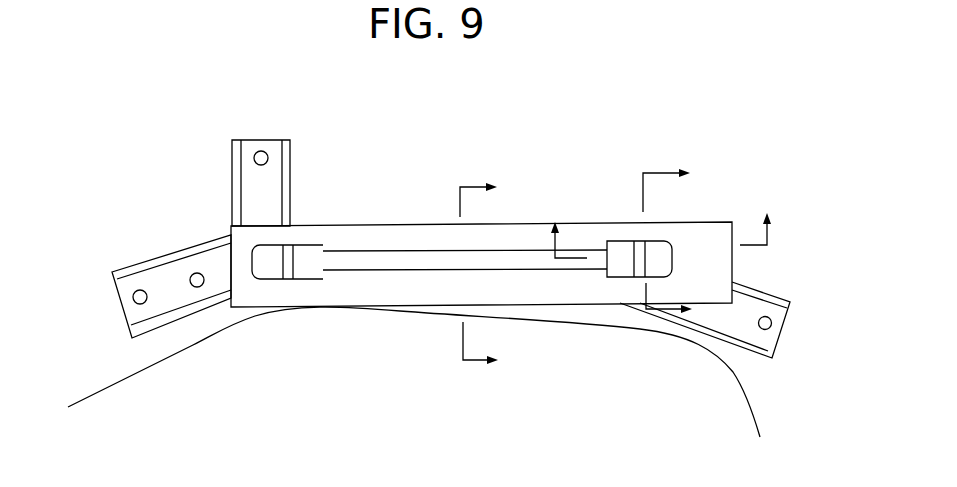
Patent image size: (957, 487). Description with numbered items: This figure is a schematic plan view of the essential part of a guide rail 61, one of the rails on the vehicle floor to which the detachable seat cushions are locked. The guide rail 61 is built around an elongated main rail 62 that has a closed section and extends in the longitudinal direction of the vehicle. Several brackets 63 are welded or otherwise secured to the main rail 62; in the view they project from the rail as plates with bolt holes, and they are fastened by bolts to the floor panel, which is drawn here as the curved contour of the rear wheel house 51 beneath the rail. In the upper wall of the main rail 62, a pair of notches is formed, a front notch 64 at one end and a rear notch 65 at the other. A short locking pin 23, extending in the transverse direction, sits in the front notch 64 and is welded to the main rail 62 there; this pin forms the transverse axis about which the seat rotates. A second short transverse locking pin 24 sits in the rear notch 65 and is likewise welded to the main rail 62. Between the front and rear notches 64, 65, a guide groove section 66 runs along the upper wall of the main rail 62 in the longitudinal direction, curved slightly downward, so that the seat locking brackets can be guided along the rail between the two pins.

The rear wheel house 51 is at (127, 375).
The guide rail 61 is at (372, 152).
The main rail 62 is at (368, 217).
The bracket 63 is at (285, 160).
The guide groove section 66 is at (432, 260).
The locking pin 23 is at (288, 265).
The front notch 64 is at (313, 268).
The locking pin 24 is at (637, 262).
The rear notch 65 is at (658, 257).